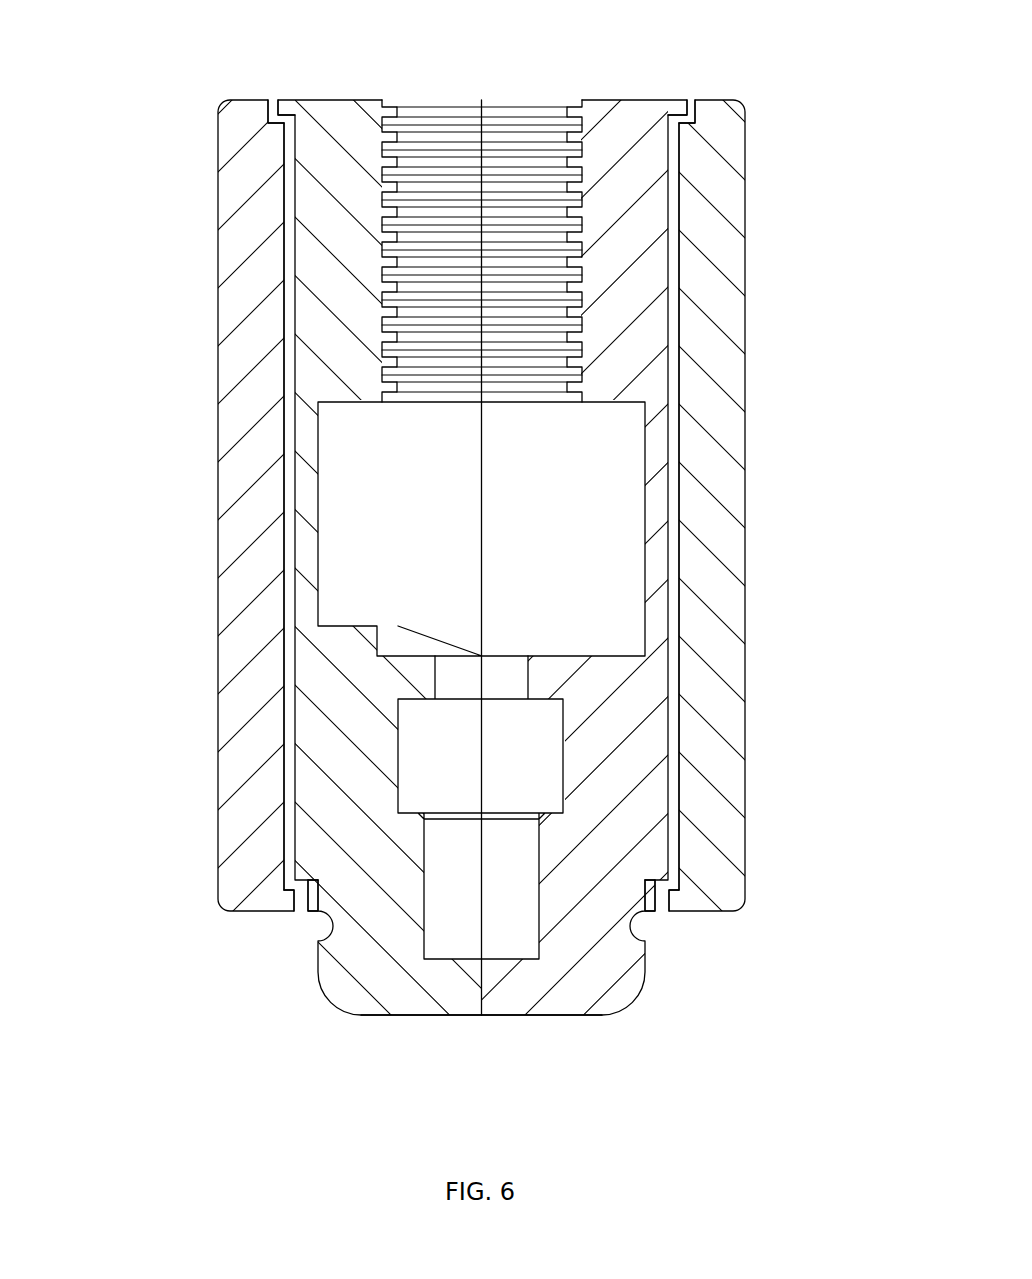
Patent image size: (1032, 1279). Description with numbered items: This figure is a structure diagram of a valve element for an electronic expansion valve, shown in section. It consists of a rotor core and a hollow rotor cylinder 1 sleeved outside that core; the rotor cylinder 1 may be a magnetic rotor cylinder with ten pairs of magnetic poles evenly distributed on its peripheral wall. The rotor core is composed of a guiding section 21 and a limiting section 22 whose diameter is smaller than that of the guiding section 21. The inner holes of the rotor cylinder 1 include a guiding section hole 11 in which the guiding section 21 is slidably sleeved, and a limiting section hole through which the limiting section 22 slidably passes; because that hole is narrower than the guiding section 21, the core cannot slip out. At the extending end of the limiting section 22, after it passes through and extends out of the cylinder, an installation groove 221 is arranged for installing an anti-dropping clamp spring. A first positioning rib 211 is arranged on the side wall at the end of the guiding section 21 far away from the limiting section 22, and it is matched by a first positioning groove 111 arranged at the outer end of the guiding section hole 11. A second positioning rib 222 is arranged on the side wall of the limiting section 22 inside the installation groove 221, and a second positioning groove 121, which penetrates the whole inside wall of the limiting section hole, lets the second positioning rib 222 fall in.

The rotor cylinder 1 is at (245, 435).
The guiding section hole 11 is at (296, 300).
The first positioning groove 111 is at (266, 106).
The second positioning groove 121 is at (300, 910).
The guiding section 21 is at (640, 292).
The first positioning rib 211 is at (294, 101).
The limiting section 22 is at (622, 990).
The installation groove 221 is at (400, 965).
The second positioning rib 222 is at (299, 878).